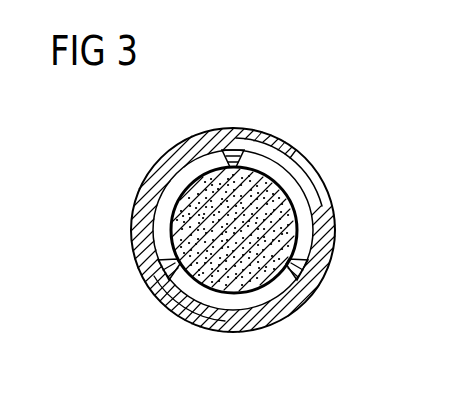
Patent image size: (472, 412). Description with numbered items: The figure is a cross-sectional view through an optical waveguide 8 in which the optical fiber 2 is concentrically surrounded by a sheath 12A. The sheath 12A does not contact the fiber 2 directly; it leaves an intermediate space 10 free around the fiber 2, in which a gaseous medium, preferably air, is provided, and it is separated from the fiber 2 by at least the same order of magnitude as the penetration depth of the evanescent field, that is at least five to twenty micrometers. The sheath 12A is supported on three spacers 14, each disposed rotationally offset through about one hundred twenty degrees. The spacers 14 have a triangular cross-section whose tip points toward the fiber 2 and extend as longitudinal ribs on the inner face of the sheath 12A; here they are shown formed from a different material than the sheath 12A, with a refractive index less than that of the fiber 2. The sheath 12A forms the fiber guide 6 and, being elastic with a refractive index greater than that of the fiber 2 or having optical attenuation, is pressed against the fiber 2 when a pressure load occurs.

The optical fiber 2 is at (258, 278).
The fiber guide 6 is at (133, 230).
The optical waveguide 8 is at (272, 114).
The intermediate space 10 is at (310, 214).
The concentric sheath 12A is at (303, 162).
The spacers 14 is at (222, 154).